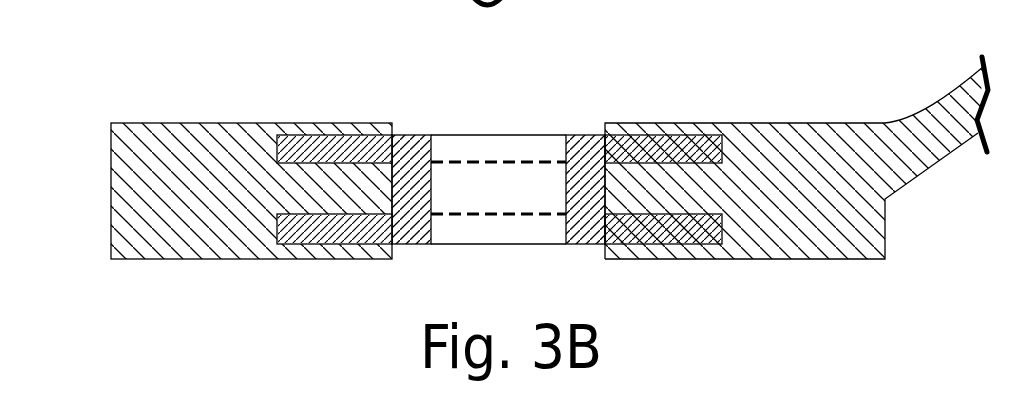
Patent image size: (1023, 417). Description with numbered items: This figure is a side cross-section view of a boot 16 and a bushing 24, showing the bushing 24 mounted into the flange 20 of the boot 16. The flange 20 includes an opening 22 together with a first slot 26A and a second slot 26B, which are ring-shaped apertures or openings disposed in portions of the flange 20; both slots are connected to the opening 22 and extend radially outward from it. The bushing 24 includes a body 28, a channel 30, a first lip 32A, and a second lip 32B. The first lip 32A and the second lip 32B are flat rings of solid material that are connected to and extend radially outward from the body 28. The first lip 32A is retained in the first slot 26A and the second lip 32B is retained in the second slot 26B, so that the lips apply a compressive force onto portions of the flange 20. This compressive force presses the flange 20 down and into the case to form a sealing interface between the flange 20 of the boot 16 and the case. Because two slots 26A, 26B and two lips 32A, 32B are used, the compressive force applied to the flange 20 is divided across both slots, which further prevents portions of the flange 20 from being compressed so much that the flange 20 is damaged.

The boot 16 is at (937, 95).
The flange 20 is at (178, 260).
The opening 22 is at (393, 188).
The bushing 24 is at (578, 130).
The first slot 26A is at (310, 137).
The second slot 26B is at (286, 245).
The body 28 is at (407, 214).
The channel 30 is at (478, 161).
The first lip 32A is at (353, 150).
The second lip 32B is at (351, 231).